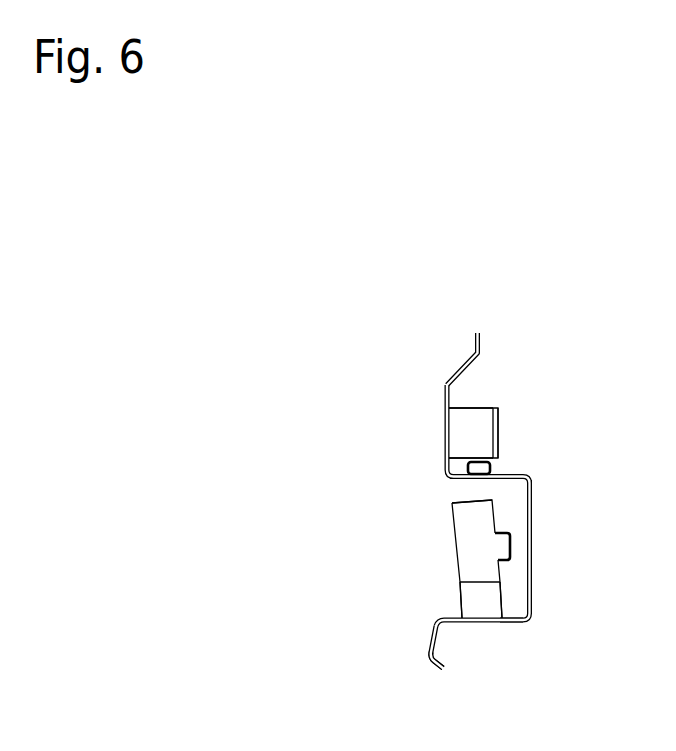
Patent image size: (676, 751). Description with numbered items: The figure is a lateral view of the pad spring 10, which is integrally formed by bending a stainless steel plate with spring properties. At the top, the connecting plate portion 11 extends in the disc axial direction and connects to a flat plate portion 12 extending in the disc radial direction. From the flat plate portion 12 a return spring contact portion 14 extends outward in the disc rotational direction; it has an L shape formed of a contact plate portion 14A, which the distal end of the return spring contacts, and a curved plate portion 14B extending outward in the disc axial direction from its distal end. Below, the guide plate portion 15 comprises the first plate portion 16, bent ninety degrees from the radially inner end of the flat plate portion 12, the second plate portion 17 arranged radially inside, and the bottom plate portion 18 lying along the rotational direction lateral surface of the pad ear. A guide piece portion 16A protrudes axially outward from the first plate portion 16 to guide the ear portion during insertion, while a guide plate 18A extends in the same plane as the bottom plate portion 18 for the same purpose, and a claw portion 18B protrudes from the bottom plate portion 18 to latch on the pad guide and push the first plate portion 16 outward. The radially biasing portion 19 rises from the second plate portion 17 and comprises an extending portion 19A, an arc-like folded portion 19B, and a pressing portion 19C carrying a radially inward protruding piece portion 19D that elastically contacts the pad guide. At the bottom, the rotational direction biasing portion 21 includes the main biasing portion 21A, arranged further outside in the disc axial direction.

The pad spring 10 is at (467, 325).
The connecting plate portion 11 is at (465, 358).
The flat plate portion 12 is at (445, 392).
The return spring contact portion 14 is at (465, 422).
The contact plate portion 14A is at (463, 437).
The curved plate portion 14B is at (498, 433).
The guide plate portion 15 is at (537, 505).
The first plate portion 16 is at (503, 472).
The guide piece portion 16A is at (468, 476).
The second plate portion 17 is at (458, 625).
The bottom plate portion 18 is at (532, 580).
The guide plate 18A is at (532, 525).
The claw portion 18B is at (512, 623).
The radially biasing portion 19 is at (452, 550).
The extending portion 19A is at (482, 623).
The folded portion 19B is at (467, 598).
The pressing portion 19C is at (472, 528).
The protruding piece portion 19D is at (507, 547).
The rotational direction biasing portion 21 is at (432, 630).
The main biasing portion 21A is at (432, 643).